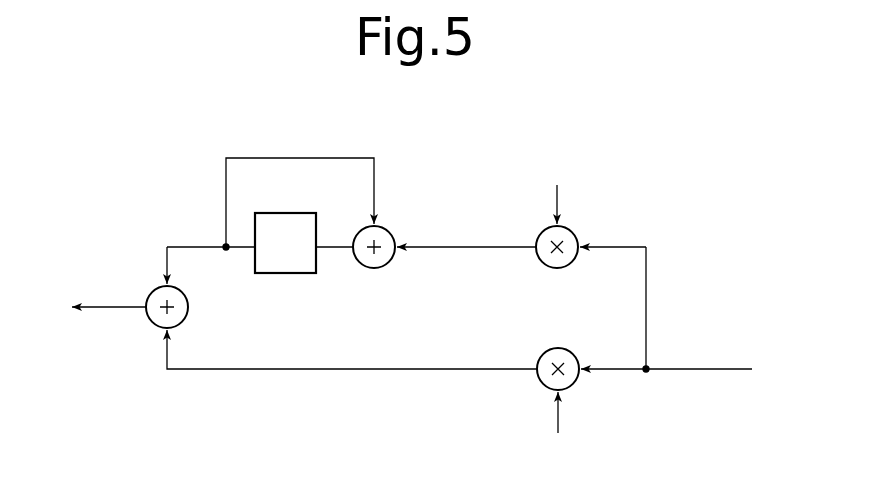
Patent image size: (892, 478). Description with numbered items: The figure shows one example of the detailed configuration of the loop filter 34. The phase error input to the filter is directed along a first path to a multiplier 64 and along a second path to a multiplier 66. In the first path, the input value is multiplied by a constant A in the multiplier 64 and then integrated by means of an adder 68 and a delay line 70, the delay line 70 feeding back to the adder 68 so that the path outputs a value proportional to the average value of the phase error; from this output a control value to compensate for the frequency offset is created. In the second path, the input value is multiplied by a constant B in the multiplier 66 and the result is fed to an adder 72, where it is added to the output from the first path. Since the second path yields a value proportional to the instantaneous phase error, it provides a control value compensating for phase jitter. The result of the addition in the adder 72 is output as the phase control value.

The loop filter 34 is at (442, 136).
The multiplier 64 is at (574, 232).
The multiplier 66 is at (575, 355).
The adder 68 is at (392, 261).
The delay line 70 is at (310, 273).
The adder 72 is at (188, 296).